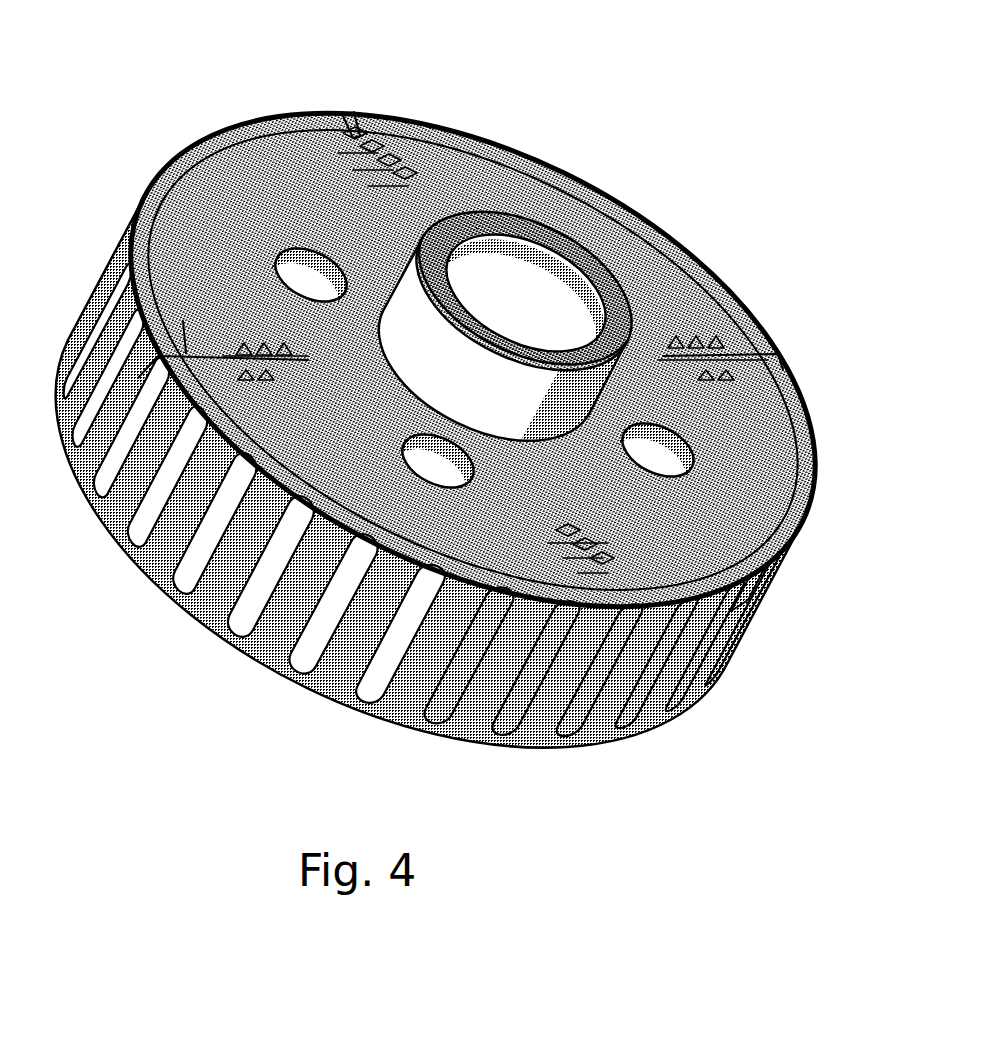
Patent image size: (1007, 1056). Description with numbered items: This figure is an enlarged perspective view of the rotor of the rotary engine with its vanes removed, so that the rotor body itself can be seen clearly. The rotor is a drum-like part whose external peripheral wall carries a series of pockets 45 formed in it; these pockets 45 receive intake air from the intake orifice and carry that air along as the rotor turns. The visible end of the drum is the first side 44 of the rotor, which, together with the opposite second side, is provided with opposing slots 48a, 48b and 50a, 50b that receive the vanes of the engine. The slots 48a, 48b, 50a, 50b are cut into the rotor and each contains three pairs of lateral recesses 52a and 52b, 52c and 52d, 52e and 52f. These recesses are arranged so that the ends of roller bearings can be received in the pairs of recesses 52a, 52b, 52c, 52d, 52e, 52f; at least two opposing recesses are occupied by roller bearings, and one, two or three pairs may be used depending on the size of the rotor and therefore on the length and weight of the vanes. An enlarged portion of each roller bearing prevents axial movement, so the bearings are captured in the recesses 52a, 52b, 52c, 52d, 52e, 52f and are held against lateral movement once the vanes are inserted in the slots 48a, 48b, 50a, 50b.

The first side 44 is at (268, 210).
The pockets 45 is at (350, 695).
The slot 48a is at (338, 107).
The slot 48b is at (700, 693).
The slot 50a is at (77, 337).
The slot 50b is at (770, 347).
The lateral recess 52a is at (273, 110).
The lateral recess 52b is at (230, 335).
The lateral recess 52c is at (258, 108).
The lateral recess 52d is at (250, 335).
The lateral recess 52e is at (244, 133).
The lateral recess 52f is at (270, 335).